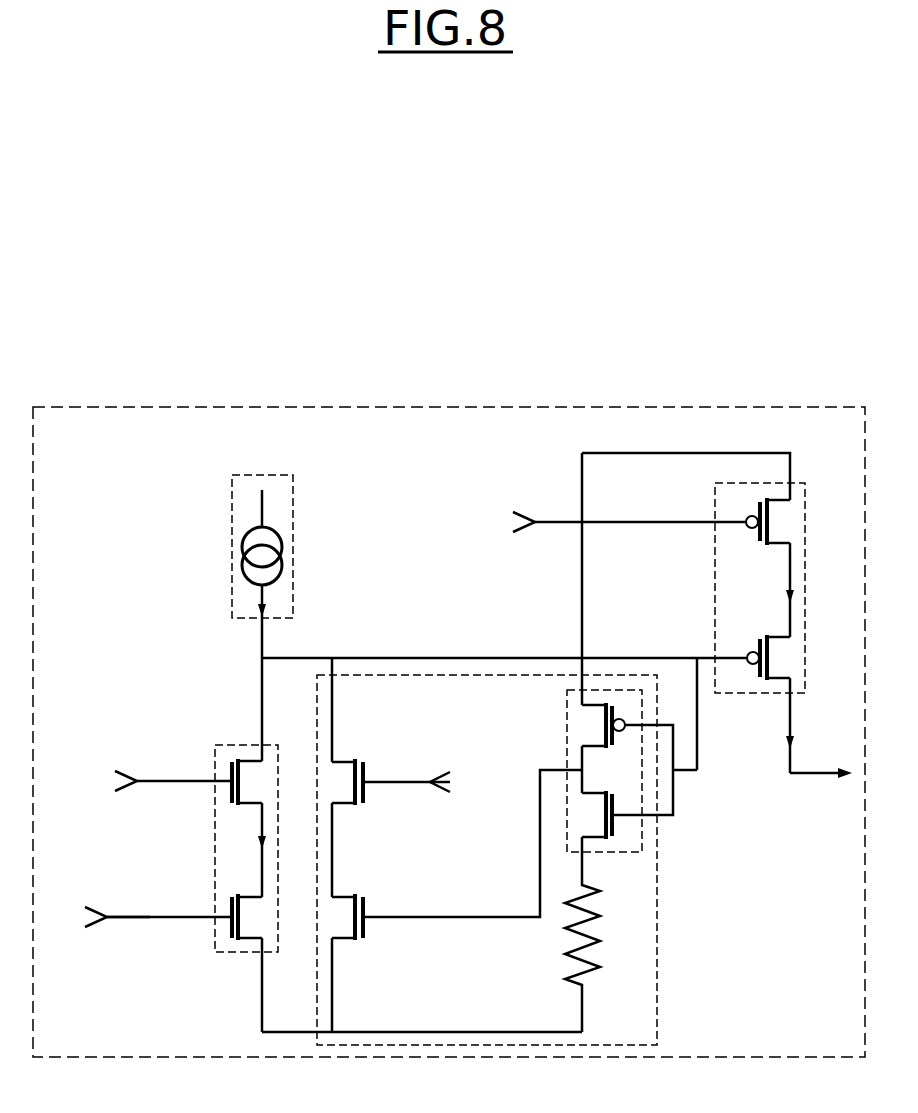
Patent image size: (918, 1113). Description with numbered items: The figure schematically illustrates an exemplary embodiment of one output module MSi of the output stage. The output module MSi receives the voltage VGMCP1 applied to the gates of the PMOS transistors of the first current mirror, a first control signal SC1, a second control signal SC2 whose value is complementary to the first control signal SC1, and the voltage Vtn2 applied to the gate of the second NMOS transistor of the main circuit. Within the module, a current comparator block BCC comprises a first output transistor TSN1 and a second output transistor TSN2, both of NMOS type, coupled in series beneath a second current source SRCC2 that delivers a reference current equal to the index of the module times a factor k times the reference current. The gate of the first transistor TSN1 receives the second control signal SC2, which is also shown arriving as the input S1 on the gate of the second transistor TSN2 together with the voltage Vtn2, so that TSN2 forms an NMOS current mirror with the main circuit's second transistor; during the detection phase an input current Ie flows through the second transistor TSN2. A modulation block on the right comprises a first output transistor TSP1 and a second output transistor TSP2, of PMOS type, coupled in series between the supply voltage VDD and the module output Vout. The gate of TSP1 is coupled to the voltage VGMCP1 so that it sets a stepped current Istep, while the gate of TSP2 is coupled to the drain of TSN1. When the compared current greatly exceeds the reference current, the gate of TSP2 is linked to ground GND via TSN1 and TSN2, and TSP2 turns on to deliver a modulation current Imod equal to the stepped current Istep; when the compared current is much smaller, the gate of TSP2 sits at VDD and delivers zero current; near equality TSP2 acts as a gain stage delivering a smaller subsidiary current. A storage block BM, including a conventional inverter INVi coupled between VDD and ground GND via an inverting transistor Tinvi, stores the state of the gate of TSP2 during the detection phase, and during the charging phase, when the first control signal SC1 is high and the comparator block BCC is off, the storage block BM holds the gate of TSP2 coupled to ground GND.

The output module MSi is at (448, 406).
The second current source SRCC2 is at (231, 549).
The current comparator block BCC is at (228, 738).
The first output transistor TSN1 is at (218, 809).
The second output transistor TSN2 is at (218, 894).
The control signal input S1 is at (140, 932).
The second control signal SC2 is at (117, 766).
The first control signal SC1 is at (419, 769).
The voltage Vtn2 is at (90, 904).
The input current Ie is at (250, 850).
The storage block BM is at (523, 860).
The inverting transistor Tinvi is at (457, 855).
The inverter INVi is at (566, 710).
The ground GND is at (422, 1016).
The supply voltage VDD is at (686, 461).
The first output transistor TSP1 is at (739, 504).
The second output transistor TSP2 is at (738, 637).
The voltage VGMCP1 is at (612, 504).
The stepped current Istep is at (761, 590).
The modulation current Imod is at (761, 725).
The output voltage Vout is at (827, 759).